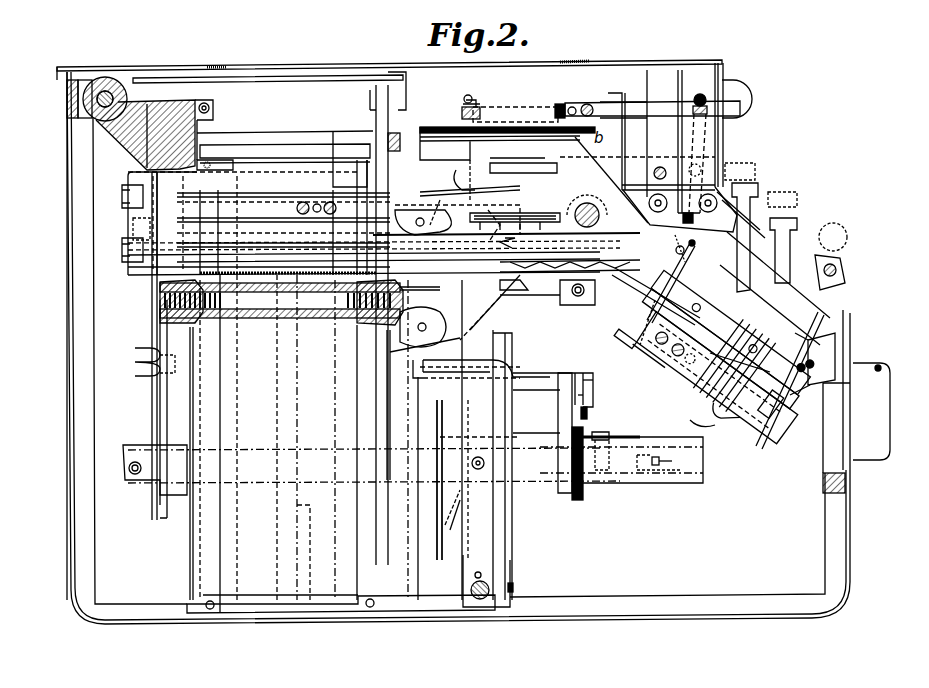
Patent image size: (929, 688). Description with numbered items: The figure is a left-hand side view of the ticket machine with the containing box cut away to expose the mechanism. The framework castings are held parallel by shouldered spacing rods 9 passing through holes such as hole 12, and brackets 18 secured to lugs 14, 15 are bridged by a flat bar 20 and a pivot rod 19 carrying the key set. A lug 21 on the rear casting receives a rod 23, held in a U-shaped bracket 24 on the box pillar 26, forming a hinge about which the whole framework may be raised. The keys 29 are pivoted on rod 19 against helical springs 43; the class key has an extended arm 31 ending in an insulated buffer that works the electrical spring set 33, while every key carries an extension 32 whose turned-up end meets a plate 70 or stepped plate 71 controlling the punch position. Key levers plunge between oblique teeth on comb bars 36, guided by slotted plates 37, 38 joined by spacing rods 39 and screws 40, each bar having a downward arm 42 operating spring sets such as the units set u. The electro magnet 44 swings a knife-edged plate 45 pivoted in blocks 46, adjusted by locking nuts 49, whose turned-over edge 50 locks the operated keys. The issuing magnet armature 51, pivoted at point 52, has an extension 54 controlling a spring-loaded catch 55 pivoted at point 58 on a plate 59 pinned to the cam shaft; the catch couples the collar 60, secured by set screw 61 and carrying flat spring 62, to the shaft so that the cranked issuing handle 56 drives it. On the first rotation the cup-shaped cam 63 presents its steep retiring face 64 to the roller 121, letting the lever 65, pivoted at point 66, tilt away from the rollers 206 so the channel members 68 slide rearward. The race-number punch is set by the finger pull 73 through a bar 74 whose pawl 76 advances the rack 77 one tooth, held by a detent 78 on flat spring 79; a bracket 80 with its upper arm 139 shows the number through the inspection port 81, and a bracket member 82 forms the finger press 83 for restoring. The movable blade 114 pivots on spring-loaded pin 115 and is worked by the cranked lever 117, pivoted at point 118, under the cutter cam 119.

The shouldered spacing rod 9 is at (252, 300).
The hole 12 is at (180, 322).
The lug 14 is at (440, 328).
The lug 15 is at (455, 225).
The bracket 18 is at (878, 330).
The pivot rod 19 is at (600, 226).
The flat bar 20 is at (455, 150).
The lug 21 is at (122, 150).
The rod 23 is at (100, 128).
The U-shaped bracket 24 is at (67, 100).
The pillar 26 is at (67, 214).
The key 29 is at (775, 238).
The extended arm 31 is at (624, 140).
The key extension 32 is at (452, 173).
The electrical spring set 33 is at (538, 110).
The comb bar 36 is at (738, 348).
The slotted plate 37 is at (745, 311).
The slotted plate 38 is at (826, 292).
The shouldered spacing rod 39 is at (726, 338).
The screw 40 is at (686, 243).
The downwardly extending arm 42 is at (766, 429).
The helical spring 43 is at (702, 134).
The electro magnet 44 is at (743, 385).
The plate 45 is at (497, 110).
The block 46 is at (705, 430).
The locking nut 49 is at (809, 387).
The turned-over edge 50 is at (838, 340).
The armature 51 is at (572, 373).
The pivot point 52 is at (593, 378).
The armature extension 54 is at (325, 478).
The spring-loaded catch 55 is at (593, 390).
The issuing handle 56 is at (876, 345).
The pivot point 58 is at (590, 413).
The plate 59 is at (563, 493).
The collar 60 is at (655, 478).
The set screw 61 is at (605, 432).
The flat spring 62 is at (616, 356).
The cup-shaped cam 63 is at (440, 520).
The retiring face 64 is at (458, 524).
The lever 65 is at (495, 538).
The pivot point 66 is at (488, 582).
The channel member 68 is at (275, 210).
The plate 70 is at (535, 165).
The stepped plate 71 is at (510, 228).
The finger pull 73 is at (738, 90).
The bar 74 is at (570, 92).
The pawl 76 is at (556, 298).
The rack 77 is at (545, 285).
The detent 78 is at (525, 296).
The flat spring 79 is at (480, 300).
The extended bracket 80 is at (680, 252).
The inspection port 81 is at (593, 62).
The bracket member 82 is at (620, 262).
The finger press 83 is at (620, 130).
The movable blade 114 is at (258, 76).
The spring-loaded pivot pin 115 is at (400, 72).
The cranked lever 117 is at (160, 300).
The pivot point 118 is at (135, 364).
The cam 119 is at (155, 398).
The roller 121 is at (478, 472).
The upper arm 139 is at (663, 69).
The roller 206 is at (512, 206).
The common set of springs u is at (700, 421).